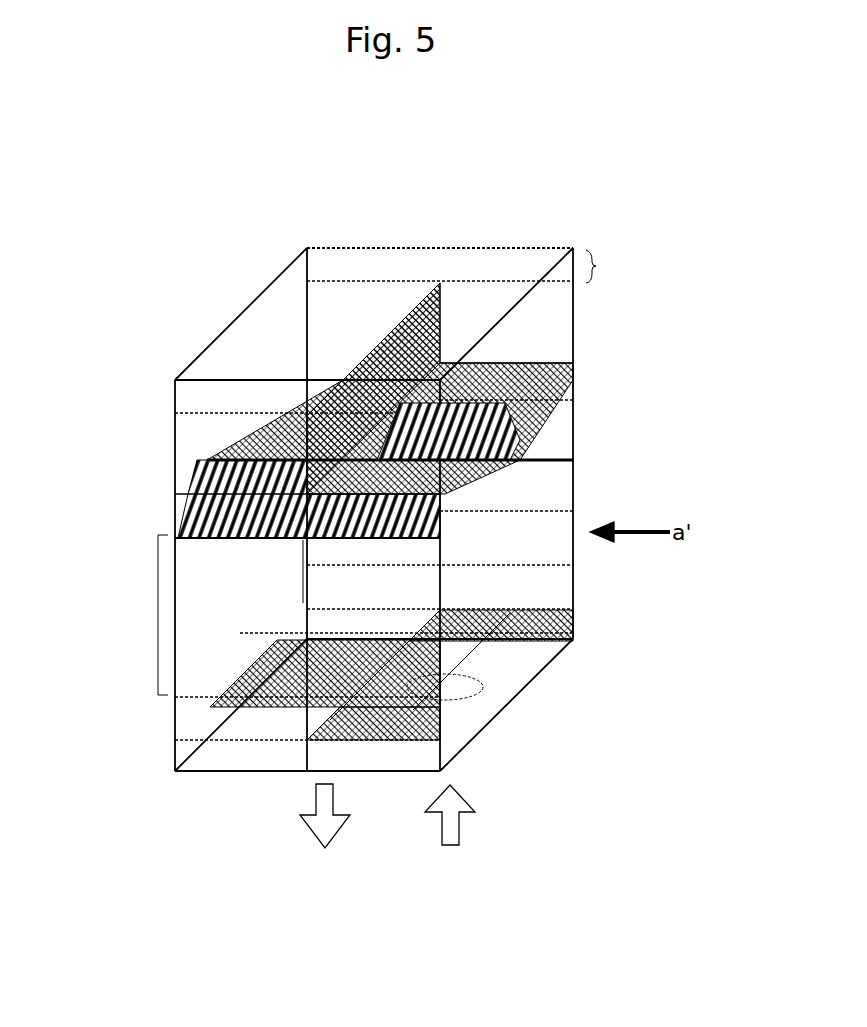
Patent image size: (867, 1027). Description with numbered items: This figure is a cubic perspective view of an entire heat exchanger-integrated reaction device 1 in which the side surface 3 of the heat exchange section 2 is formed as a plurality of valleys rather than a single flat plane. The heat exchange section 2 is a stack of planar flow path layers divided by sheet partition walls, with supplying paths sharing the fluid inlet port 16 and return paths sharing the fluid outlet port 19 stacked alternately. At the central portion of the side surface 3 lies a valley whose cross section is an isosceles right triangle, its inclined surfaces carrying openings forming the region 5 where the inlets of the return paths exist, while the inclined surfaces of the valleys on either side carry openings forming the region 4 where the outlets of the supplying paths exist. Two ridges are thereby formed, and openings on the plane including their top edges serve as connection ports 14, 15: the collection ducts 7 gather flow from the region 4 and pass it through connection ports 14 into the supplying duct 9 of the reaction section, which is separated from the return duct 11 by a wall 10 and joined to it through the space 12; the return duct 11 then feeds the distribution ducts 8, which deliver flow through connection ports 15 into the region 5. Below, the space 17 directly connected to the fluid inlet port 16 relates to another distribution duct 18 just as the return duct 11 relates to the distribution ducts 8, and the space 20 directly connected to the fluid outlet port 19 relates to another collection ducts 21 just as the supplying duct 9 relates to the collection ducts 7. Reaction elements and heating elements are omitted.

The heat exchanger-integrated reaction device 1 is at (307, 248).
The heat exchange section 2 is at (346, 637).
The side surface 3 is at (205, 518).
The region 4 is at (573, 511).
The region 5 is at (517, 447).
The collection duct 7 is at (513, 457).
The distribution duct 8 is at (510, 455).
The supplying duct 9 is at (335, 330).
The wall 10 is at (408, 345).
The return duct 11 is at (493, 363).
The space 12 is at (469, 266).
The connection port 14 is at (290, 382).
The connection port 15 is at (543, 363).
The fluid inlet port 16 is at (460, 683).
The space 17 is at (410, 757).
The distribution duct 18 is at (505, 665).
The fluid outlet port 19 is at (293, 718).
The space 20 is at (257, 755).
The collection duct 21 is at (303, 603).